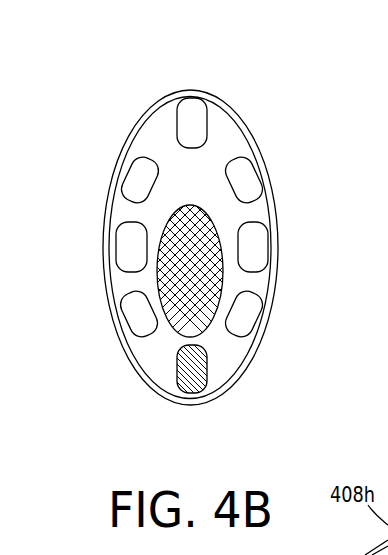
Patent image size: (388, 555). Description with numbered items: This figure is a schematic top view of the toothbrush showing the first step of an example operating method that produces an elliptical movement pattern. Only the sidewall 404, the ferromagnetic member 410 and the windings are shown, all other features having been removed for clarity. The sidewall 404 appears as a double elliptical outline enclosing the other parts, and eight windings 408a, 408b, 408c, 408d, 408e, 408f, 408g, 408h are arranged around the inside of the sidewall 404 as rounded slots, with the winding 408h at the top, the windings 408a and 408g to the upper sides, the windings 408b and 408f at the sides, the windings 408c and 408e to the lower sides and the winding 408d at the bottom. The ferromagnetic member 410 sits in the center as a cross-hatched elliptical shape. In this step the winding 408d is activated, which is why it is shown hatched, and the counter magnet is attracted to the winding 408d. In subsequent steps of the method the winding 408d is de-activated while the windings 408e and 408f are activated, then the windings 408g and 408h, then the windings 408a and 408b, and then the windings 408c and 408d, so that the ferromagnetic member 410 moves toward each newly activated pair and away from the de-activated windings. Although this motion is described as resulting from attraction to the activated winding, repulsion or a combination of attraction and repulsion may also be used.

The sidewall 404 is at (233, 110).
The ferromagnetic member 410 is at (210, 278).
The winding 408a is at (247, 173).
The winding 408b is at (257, 249).
The winding 408c is at (247, 315).
The winding 408d is at (191, 380).
The winding 408e is at (135, 313).
The winding 408f is at (127, 245).
The winding 408g is at (138, 182).
The winding 408h is at (188, 112).